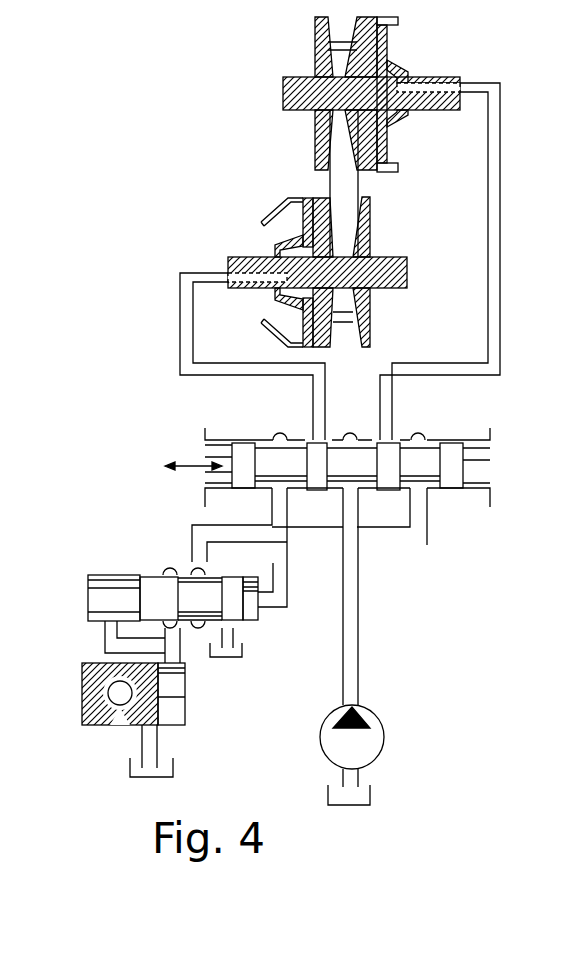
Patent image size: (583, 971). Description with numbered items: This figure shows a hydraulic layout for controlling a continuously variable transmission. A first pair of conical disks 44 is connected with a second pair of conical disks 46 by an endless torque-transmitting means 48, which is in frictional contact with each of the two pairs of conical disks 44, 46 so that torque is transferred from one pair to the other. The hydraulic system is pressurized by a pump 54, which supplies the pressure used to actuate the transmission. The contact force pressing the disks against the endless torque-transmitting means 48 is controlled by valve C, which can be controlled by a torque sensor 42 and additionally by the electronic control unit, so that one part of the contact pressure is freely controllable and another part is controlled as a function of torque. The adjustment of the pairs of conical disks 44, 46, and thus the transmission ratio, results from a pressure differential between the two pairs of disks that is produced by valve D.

The first pair of conical disks 44 is at (315, 36).
The second pair of conical disks 46 is at (368, 235).
The endless torque-transmitting means 48 is at (340, 183).
The valve D is at (243, 452).
The valve C is at (97, 600).
The torque sensor 42 is at (80, 674).
The pump 54 is at (333, 740).